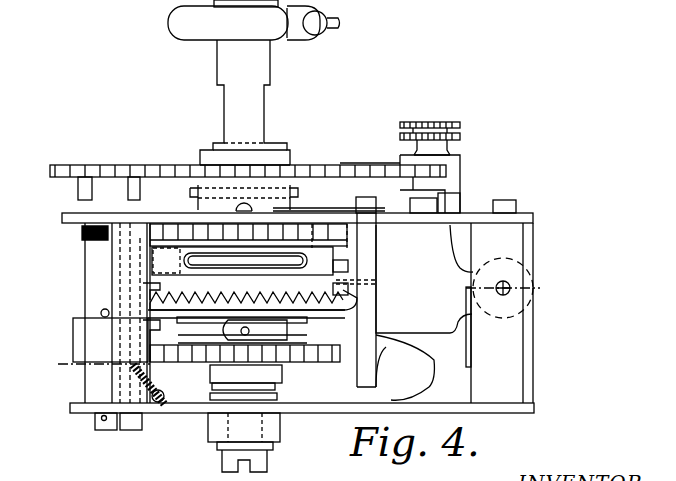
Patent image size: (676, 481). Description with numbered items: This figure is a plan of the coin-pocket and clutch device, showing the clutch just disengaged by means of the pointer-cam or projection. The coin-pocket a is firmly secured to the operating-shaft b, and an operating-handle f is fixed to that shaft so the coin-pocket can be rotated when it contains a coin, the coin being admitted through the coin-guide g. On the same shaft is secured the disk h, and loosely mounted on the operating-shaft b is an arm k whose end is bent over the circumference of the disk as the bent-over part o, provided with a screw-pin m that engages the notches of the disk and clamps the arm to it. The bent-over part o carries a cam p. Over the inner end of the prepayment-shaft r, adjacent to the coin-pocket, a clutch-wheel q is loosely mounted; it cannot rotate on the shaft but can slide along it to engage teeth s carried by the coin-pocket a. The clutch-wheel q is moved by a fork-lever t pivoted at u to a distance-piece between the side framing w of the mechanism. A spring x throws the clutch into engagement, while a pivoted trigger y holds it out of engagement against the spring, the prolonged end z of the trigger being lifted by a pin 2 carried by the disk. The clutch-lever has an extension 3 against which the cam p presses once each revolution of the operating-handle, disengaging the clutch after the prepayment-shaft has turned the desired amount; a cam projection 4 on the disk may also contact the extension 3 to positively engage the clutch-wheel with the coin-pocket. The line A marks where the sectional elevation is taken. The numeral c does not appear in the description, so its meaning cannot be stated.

The operating-handle f is at (295, 32).
The operating-shaft b is at (253, 118).
The disk h is at (143, 170).
The arm k is at (343, 162).
The cam projection 4 is at (78, 190).
The pin 2 is at (140, 193).
The toothed bar c is at (192, 220).
The side framing w is at (70, 215).
The coin-pocket a is at (300, 232).
The end of trigger z is at (370, 197).
The screw-pin m is at (426, 130).
The bent-over part o is at (428, 183).
The cam p is at (461, 200).
The extension 3 is at (416, 203).
The coin-guide g is at (343, 255).
The teeth s is at (148, 293).
The clutch-wheel q is at (343, 305).
The fork-lever t is at (398, 323).
The pivot u is at (511, 280).
The section line A is at (300, 336).
The trigger y is at (395, 366).
The spring x is at (468, 365).
The prepayment-shaft r is at (280, 388).